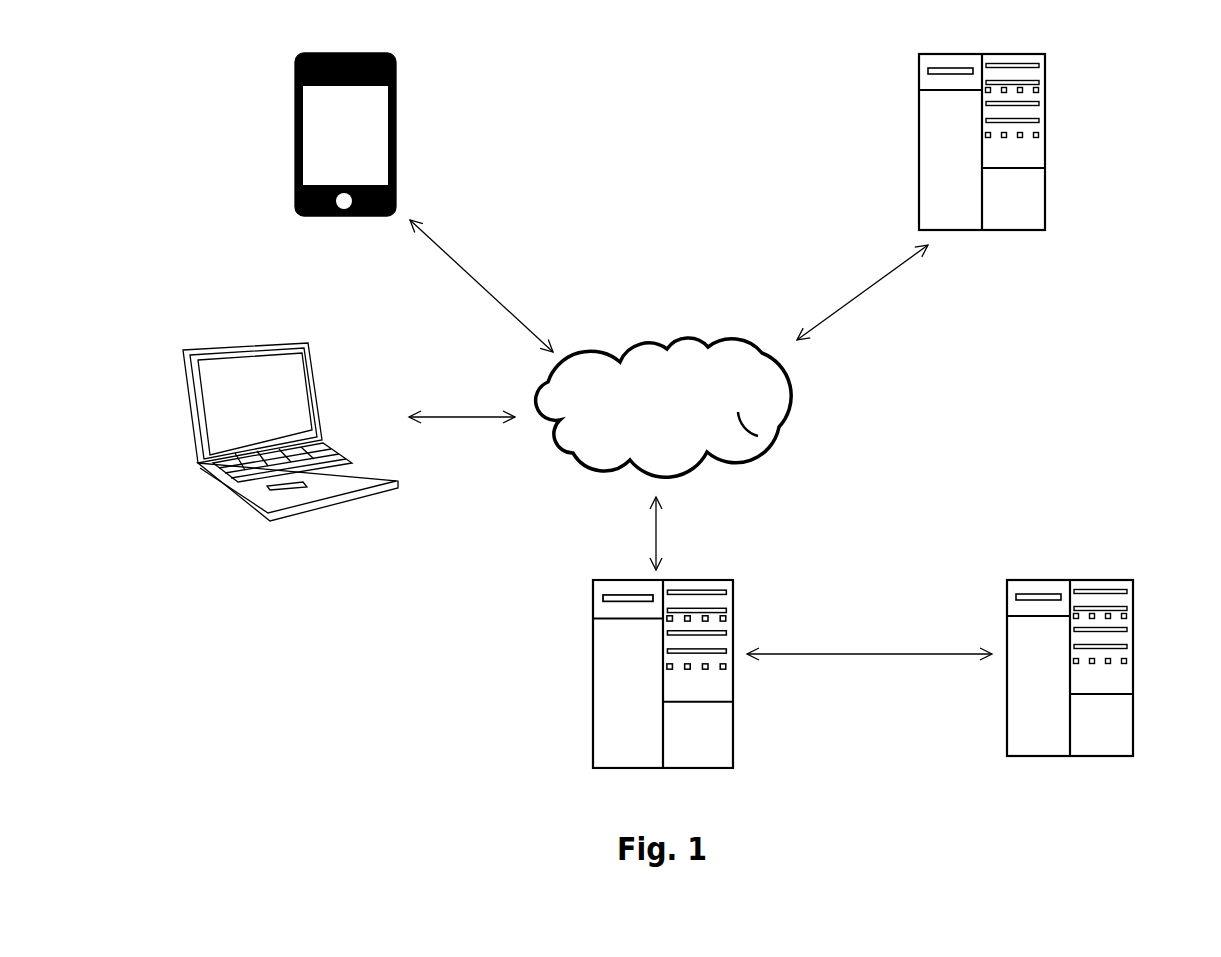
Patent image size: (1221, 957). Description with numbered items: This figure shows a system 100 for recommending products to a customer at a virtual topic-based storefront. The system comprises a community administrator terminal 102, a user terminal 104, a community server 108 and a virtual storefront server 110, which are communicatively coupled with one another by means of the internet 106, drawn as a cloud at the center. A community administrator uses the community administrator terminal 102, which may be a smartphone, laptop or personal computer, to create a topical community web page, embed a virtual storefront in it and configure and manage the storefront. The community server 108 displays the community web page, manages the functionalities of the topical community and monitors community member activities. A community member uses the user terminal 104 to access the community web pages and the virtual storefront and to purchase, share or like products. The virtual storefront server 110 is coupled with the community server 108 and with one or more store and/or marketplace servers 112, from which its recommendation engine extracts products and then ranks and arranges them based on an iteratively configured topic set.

The network environment / system 100 is at (1070, 405).
The community administrator terminal 102 is at (242, 508).
The user terminal 104 is at (300, 205).
The internet 106 is at (780, 430).
The community server 108 is at (919, 167).
The virtual storefront server 110 is at (593, 704).
The store and/or marketplace server 112 is at (1007, 693).